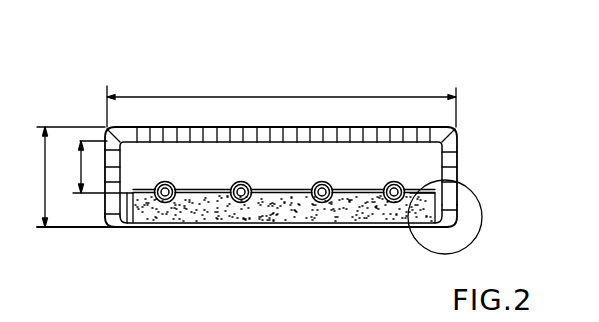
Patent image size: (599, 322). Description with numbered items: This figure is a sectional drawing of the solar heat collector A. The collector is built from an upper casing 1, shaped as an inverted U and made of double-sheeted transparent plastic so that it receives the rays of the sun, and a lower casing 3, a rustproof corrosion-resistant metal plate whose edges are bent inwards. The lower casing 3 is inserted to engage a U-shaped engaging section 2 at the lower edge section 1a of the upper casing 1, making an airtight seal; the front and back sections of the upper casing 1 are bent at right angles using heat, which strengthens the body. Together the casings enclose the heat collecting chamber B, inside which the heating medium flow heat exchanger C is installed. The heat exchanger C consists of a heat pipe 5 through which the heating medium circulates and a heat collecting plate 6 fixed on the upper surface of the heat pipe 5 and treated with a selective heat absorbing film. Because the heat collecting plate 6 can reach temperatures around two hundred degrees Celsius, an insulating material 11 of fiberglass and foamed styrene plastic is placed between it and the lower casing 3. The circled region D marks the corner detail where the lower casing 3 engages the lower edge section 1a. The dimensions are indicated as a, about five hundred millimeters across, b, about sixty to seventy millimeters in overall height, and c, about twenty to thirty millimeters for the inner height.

The upper casing 1 is at (456, 151).
The lower edge section 1a is at (458, 223).
The U-shaped engaging section 2 is at (242, 246).
The lower casing 3 is at (345, 228).
The heat pipe 5 is at (239, 203).
The heat collecting plate 6 is at (270, 199).
The insulating material 11 is at (377, 215).
The solar heat collector A is at (456, 130).
The heat collecting chamber B is at (371, 157).
The heating medium flow heat exchanger C is at (215, 172).
The detail circle D is at (483, 204).
The width dimension a is at (281, 101).
The overall height dimension b is at (67, 177).
The inner height dimension c is at (98, 167).